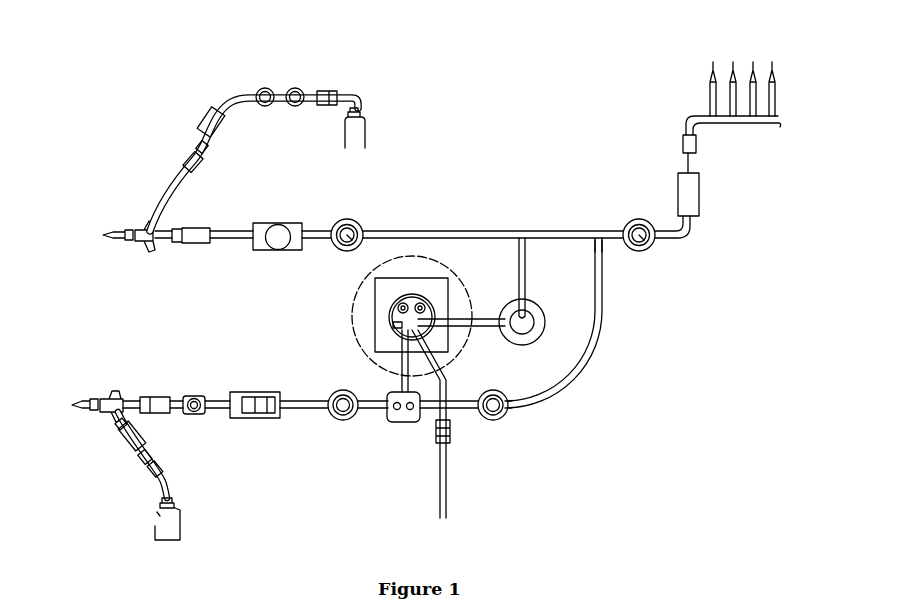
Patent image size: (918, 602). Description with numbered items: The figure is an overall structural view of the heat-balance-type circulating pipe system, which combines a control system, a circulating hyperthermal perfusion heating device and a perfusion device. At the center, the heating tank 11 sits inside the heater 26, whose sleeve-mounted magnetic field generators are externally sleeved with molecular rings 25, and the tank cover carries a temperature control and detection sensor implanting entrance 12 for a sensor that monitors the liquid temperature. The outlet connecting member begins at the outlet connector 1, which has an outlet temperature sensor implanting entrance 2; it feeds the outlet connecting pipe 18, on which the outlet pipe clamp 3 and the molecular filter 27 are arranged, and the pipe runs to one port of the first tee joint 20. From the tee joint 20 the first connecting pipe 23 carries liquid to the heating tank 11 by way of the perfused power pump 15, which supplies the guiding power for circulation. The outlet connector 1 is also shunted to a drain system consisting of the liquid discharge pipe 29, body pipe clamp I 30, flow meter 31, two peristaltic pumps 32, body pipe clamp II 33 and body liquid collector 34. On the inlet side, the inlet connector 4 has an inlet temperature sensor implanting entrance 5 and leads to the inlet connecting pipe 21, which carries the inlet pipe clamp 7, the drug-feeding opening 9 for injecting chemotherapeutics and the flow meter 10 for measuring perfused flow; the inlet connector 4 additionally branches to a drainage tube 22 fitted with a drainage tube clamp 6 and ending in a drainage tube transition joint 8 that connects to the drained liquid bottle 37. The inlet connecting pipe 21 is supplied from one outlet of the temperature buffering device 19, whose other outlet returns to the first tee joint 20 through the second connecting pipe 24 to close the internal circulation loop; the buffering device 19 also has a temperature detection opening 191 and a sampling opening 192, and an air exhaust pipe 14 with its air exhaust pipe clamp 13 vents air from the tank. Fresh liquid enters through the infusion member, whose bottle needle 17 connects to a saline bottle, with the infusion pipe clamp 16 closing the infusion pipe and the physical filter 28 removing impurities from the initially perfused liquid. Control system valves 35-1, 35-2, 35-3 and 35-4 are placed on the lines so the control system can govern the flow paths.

The outlet connector 1 is at (115, 224).
The outlet temperature sensor implanting entrance 2 is at (150, 250).
The outlet pipe clamp 3 is at (189, 231).
The inlet connector 4 is at (84, 408).
The inlet temperature sensor implanting entrance 5 is at (134, 357).
The drainage tube clamp 6 is at (129, 439).
The inlet pipe clamp 7 is at (156, 400).
The drainage tube transition joint 8 is at (158, 466).
The drug-feeding opening 9 is at (196, 401).
The flow meter 10 is at (256, 395).
The heating tank 11 is at (388, 325).
The temperature control and detection sensor implanting entrance 12 is at (421, 307).
The air exhaust pipe clamp 13 is at (446, 436).
The air exhaust pipe 14 is at (443, 462).
The perfused power pump 15 is at (528, 320).
The infusion pipe clamp 16 is at (691, 143).
The bottle needle 17 is at (772, 62).
The outlet connecting pipe 18 is at (395, 231).
The temperature buffering device 19 is at (402, 422).
The first tee joint 20 is at (600, 230).
The inlet connecting pipe 21 is at (308, 409).
The drainage tube 22 is at (143, 452).
The first connecting pipe 23 is at (524, 258).
The second connecting pipe 24 is at (577, 388).
The molecular ring 25 is at (366, 311).
The heater 26 is at (445, 348).
The molecular filter 27 is at (286, 219).
The physical filter 28 is at (694, 195).
The liquid discharge pipe 29 is at (174, 200).
The body pipe clamp I 30 is at (191, 150).
The flow meter 31 is at (204, 110).
The peristaltic pump 32 is at (294, 95).
The body pipe clamp II 33 is at (329, 94).
The body liquid collector 34 is at (358, 125).
The control system valve 35-1 is at (642, 239).
The control system valve 35-2 is at (352, 230).
The control system valve 35-3 is at (345, 410).
The control system valve 35-4 is at (499, 410).
The drained liquid bottle 37 is at (178, 515).
The temperature detection opening 191 is at (397, 410).
The sampling opening 192 is at (410, 410).